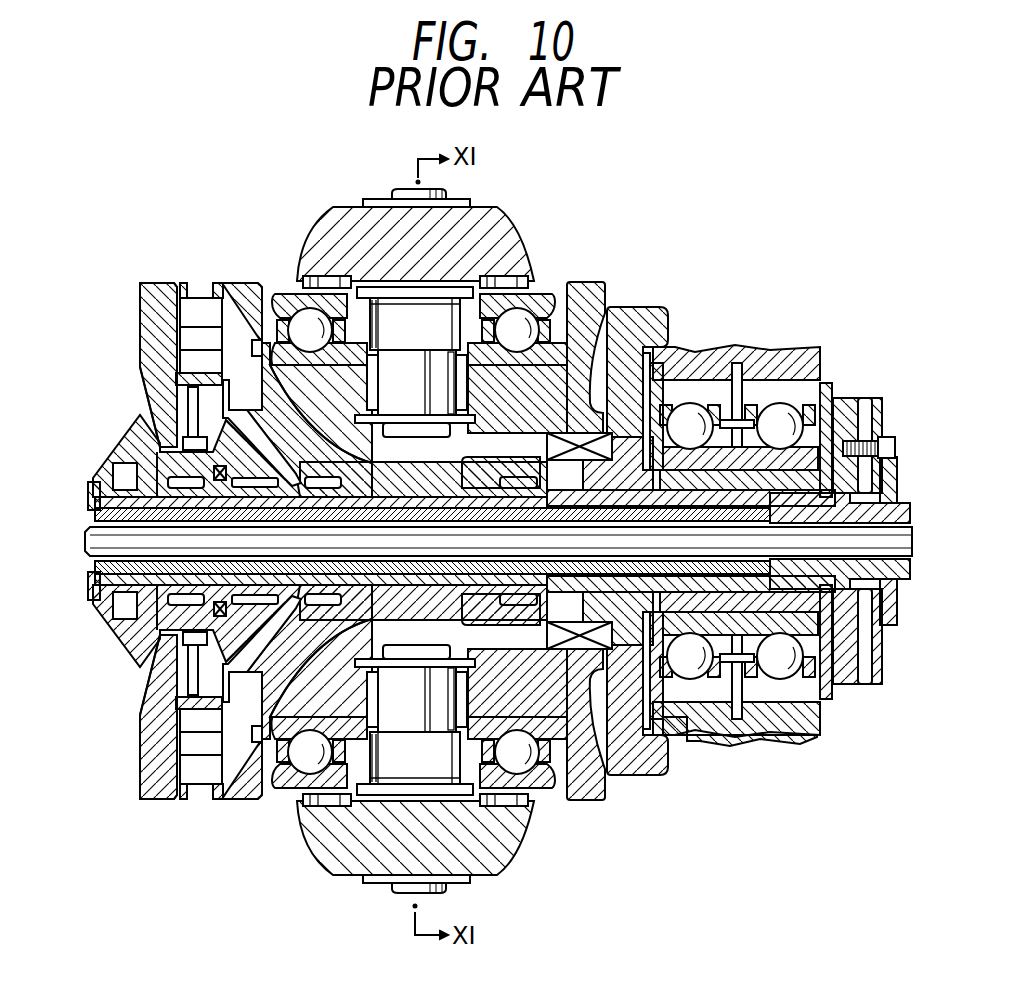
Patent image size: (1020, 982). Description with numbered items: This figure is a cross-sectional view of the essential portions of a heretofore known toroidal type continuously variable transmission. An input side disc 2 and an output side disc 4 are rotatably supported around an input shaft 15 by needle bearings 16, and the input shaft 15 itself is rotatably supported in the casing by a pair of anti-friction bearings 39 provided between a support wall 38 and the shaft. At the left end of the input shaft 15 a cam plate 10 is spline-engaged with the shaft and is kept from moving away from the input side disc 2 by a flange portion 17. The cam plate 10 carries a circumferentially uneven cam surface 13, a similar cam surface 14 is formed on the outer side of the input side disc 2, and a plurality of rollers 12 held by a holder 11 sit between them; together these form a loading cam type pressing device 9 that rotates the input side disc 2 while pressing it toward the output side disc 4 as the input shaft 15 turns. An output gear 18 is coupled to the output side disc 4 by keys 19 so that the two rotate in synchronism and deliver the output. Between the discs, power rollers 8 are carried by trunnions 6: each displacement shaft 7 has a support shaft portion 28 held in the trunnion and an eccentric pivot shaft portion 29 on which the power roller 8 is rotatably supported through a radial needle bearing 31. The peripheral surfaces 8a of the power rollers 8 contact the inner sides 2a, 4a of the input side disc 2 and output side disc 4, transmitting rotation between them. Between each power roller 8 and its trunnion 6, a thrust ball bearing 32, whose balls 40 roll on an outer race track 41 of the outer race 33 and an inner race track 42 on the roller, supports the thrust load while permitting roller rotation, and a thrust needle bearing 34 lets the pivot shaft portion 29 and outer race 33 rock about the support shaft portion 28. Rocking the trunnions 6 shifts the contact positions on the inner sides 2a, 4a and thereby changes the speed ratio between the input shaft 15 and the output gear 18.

The input side disc 2 is at (237, 287).
The inner side of the input side disc 2a is at (340, 443).
The output side disc 4 is at (612, 300).
The inner side of the output side disc 4a is at (510, 650).
The trunnion 6 is at (474, 212).
The displacement shaft 7 is at (433, 303).
The power roller 8 is at (223, 403).
The peripheral surface of the power roller 8a is at (253, 370).
The loading cam type pressing device 9 is at (143, 313).
The cam plate 10 is at (150, 290).
The holder 11 is at (203, 803).
The roller 12 is at (199, 308).
The cam surface 13 is at (177, 287).
The cam surface 14 is at (217, 287).
The input shaft 15 is at (910, 510).
The needle bearing 16 is at (483, 505).
The flange portion 17 is at (112, 454).
The output gear 18 is at (663, 320).
The key 19 is at (583, 462).
The support shaft portion 28 is at (407, 190).
The pivot shaft portion 29 is at (390, 307).
The radial needle bearing 31 is at (453, 380).
The thrust ball bearing 32 is at (535, 315).
The outer race 33 is at (287, 294).
The thrust needle bearing 34 is at (510, 278).
The support wall 38 is at (773, 727).
The anti-friction bearing 39 is at (773, 403).
The ball 40 is at (292, 320).
The outer race track 41 is at (470, 316).
The inner race track 42 is at (376, 377).